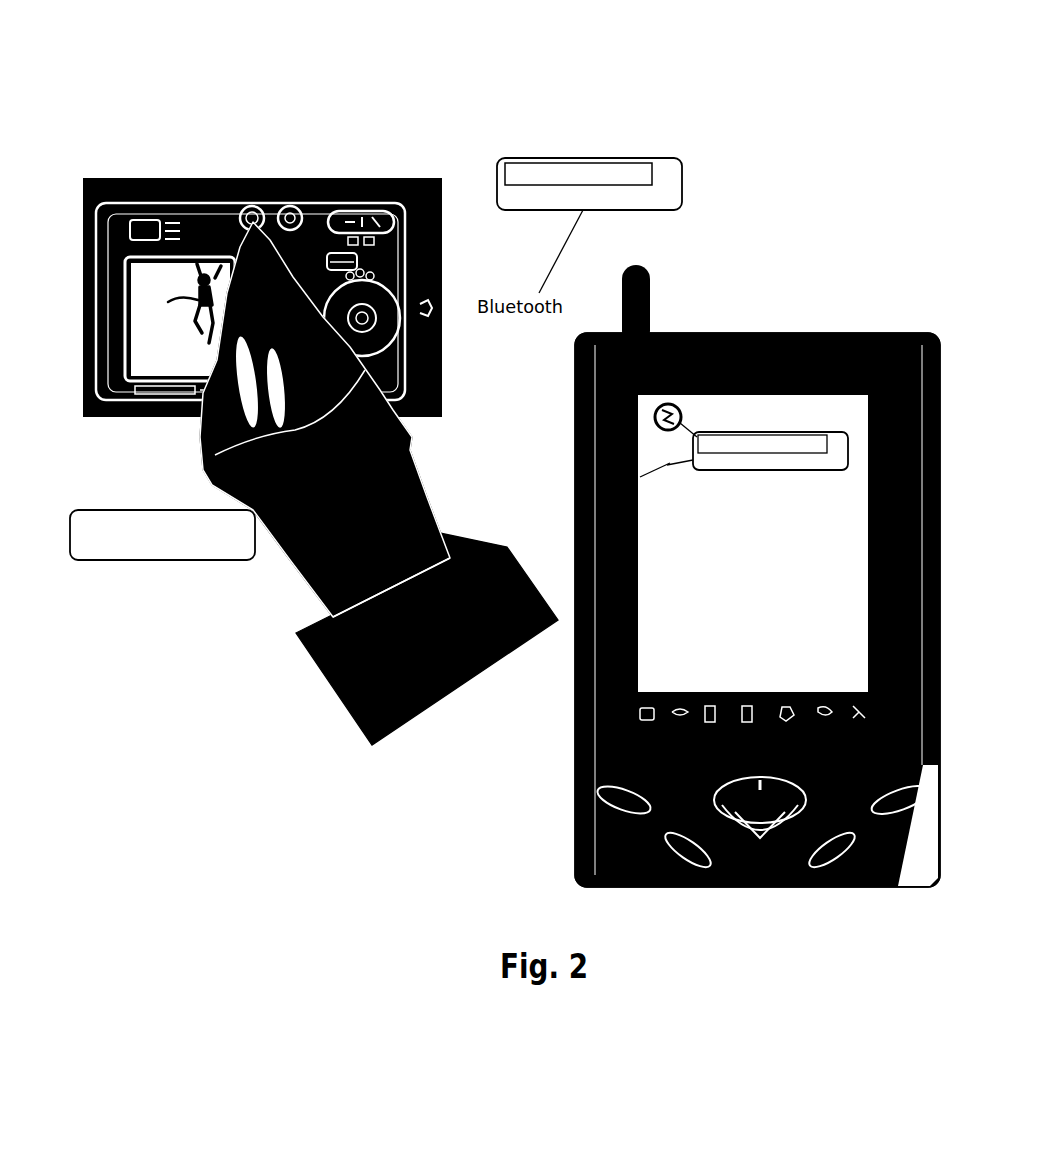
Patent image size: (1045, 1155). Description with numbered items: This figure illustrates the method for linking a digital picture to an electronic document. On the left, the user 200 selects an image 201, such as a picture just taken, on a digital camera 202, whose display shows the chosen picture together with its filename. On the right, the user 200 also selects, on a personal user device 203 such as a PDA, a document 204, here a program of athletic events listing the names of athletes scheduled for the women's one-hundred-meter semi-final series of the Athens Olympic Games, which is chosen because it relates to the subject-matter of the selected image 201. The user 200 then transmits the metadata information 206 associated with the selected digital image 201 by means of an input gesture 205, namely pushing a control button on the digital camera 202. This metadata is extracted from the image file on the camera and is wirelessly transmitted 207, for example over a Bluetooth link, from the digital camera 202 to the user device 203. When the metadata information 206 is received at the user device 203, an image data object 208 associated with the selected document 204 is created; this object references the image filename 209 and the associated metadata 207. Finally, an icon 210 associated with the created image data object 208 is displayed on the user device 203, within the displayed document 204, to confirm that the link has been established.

The user 200 is at (338, 693).
The selected image 201 is at (126, 196).
The digital camera 202 is at (236, 242).
The personal user device 203 is at (665, 530).
The document 204 is at (778, 431).
The input gesture 205 is at (257, 212).
The metadata information 206 is at (194, 333).
The wirelessly transmitted metadata 207 is at (478, 247).
The image data object 208 is at (587, 493).
The image filename 209 is at (208, 121).
The icon 210 is at (735, 333).